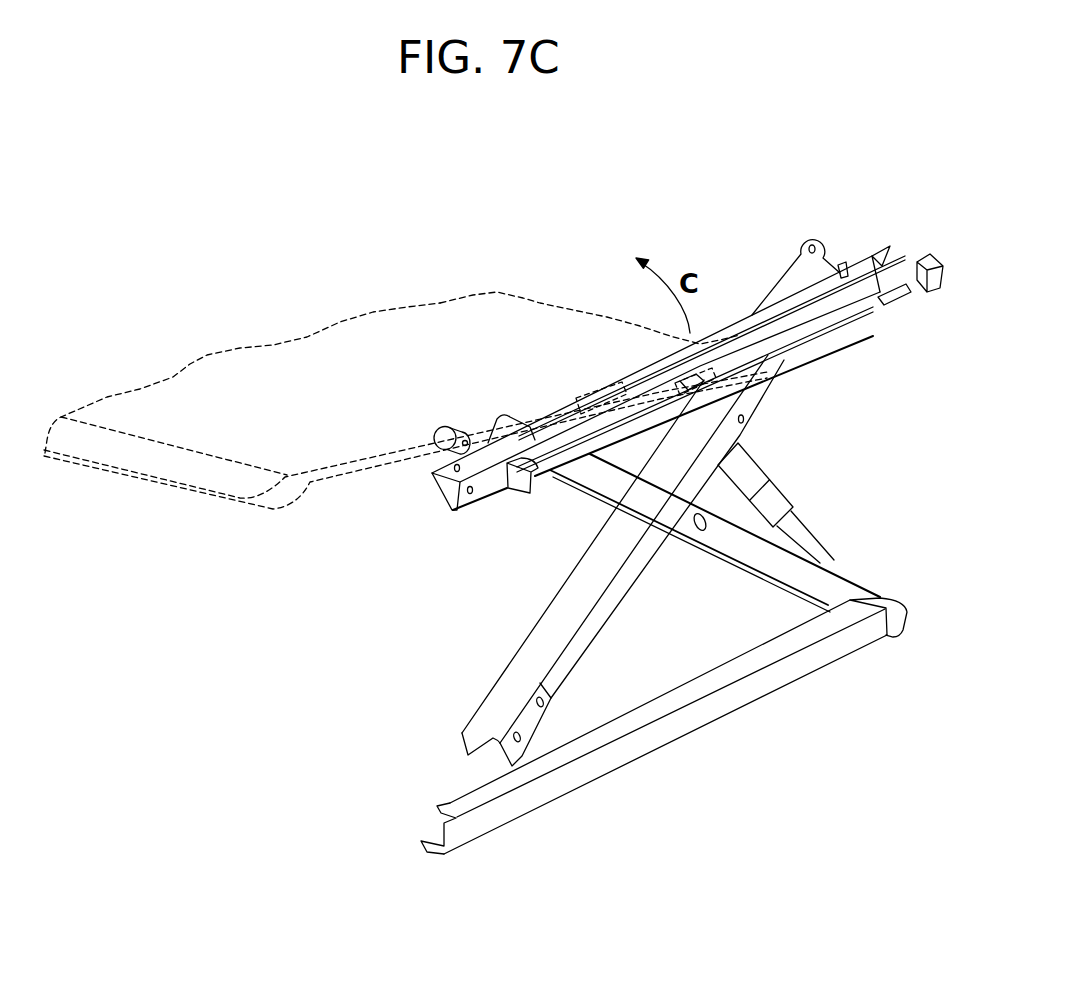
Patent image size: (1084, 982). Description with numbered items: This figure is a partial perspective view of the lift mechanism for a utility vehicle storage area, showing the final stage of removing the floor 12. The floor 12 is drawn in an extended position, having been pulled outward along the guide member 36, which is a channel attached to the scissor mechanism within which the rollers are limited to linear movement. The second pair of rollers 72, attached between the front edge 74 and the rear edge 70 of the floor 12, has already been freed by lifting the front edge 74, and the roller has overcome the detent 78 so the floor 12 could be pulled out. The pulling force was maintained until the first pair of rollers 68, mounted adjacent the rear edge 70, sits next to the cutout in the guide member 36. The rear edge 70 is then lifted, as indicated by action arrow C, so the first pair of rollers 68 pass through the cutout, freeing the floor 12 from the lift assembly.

The floor 12 is at (210, 353).
The rear edge 70 is at (540, 303).
The front edge 74 is at (137, 477).
The second pair of rollers 72 is at (433, 441).
The guide member 36 is at (534, 493).
The first pair of rollers 68 is at (744, 424).
The detent 78 is at (890, 300).